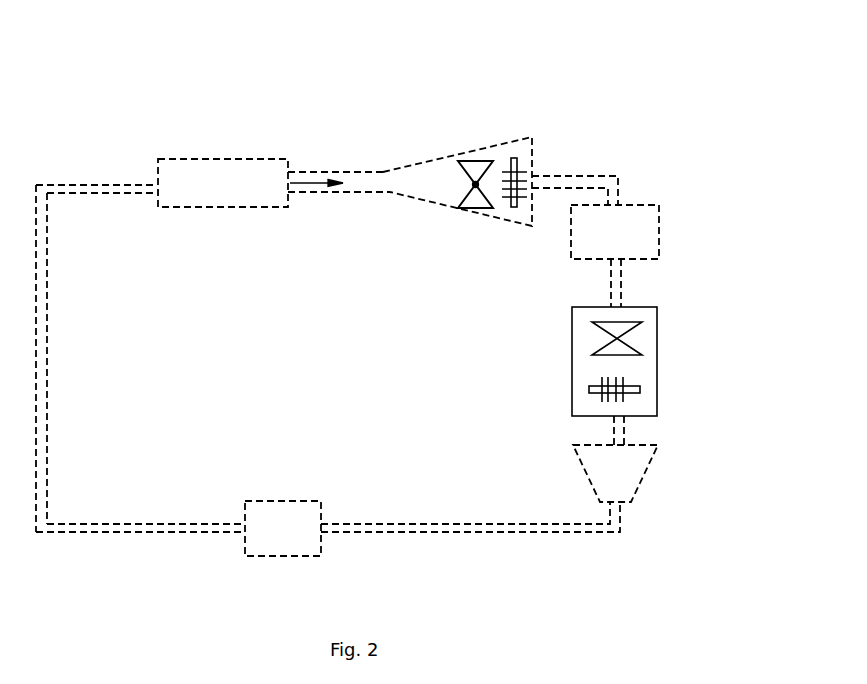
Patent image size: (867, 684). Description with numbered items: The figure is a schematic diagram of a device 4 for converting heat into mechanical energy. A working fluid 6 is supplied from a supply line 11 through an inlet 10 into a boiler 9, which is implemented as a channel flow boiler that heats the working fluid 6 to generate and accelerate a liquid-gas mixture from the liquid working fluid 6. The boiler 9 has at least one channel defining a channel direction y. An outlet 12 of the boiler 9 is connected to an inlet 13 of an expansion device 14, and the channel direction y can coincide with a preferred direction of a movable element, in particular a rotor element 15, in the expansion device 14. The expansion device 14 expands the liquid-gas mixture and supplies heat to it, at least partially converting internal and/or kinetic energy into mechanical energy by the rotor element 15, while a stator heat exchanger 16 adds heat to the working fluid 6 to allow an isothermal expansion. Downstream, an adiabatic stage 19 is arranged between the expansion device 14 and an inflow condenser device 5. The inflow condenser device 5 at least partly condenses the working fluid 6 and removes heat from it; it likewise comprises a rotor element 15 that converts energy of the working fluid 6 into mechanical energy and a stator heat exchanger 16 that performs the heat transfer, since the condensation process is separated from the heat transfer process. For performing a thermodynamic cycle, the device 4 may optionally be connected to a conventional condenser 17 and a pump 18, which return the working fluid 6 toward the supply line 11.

The device for converting heat into mechanical energy 4 is at (257, 60).
The inflow condenser device 5 is at (647, 402).
The working fluid 6 is at (155, 528).
The boiler 9 is at (197, 165).
The inlet 10 is at (157, 184).
The supply line 11 is at (38, 533).
The outlet 12 is at (287, 171).
The inlet 13 is at (383, 171).
The expansion device 14 is at (433, 175).
The rotor element 15 is at (478, 160).
The stator heat exchanger 16 is at (515, 158).
The condenser 17 is at (635, 480).
The pump 18 is at (276, 546).
The adiabatic stage 19 is at (648, 247).
The channel direction y is at (299, 184).